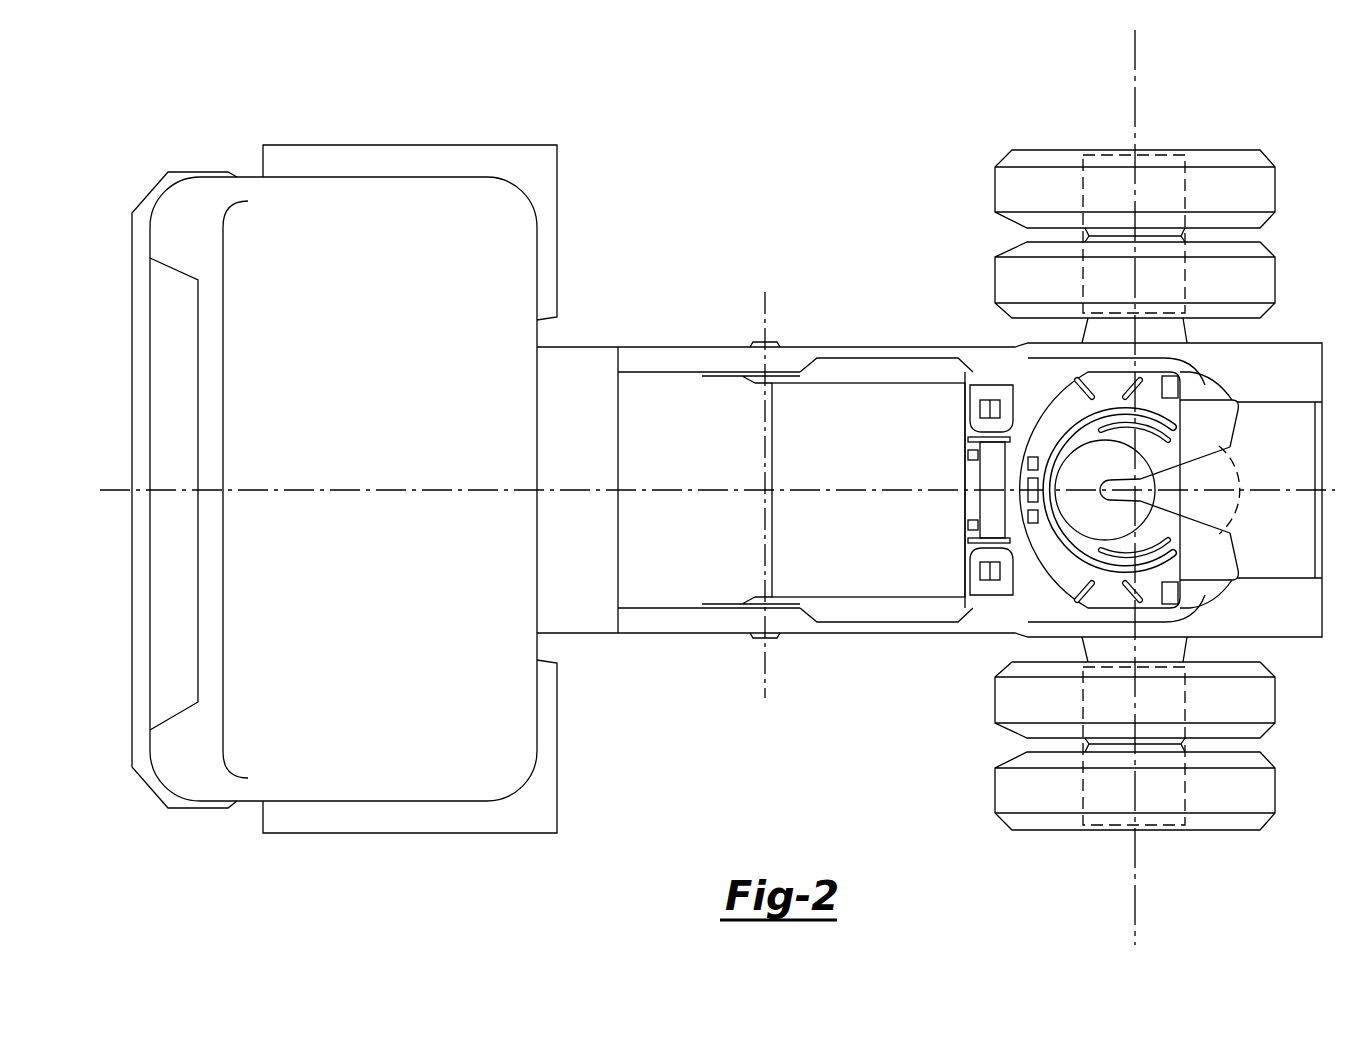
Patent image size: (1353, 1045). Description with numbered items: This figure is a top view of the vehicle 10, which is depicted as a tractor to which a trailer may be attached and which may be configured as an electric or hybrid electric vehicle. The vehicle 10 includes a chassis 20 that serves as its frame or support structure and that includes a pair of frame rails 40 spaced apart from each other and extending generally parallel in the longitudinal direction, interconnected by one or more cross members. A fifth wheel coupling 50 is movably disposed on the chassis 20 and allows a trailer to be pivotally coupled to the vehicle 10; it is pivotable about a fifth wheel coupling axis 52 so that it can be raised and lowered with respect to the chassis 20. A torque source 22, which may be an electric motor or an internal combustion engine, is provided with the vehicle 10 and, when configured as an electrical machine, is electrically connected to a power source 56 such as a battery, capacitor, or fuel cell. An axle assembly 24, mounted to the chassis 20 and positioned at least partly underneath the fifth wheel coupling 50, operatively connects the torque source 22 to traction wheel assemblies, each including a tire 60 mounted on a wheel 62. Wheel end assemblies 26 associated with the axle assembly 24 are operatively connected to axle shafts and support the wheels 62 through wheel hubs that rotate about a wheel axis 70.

The vehicle 10 is at (184, 150).
The chassis 20 is at (560, 477).
The torque source 22 is at (848, 478).
The axle assembly 24 is at (1240, 505).
The wheel end assembly 26 is at (1113, 138).
The frame rails 40 is at (637, 347).
The fifth wheel coupling 50 is at (1240, 414).
The fifth wheel coupling axis 52 is at (765, 305).
The power source 56 is at (680, 477).
The tire 60 is at (1125, 203).
The wheel 62 is at (1187, 282).
The wheel axis 70 is at (1135, 48).